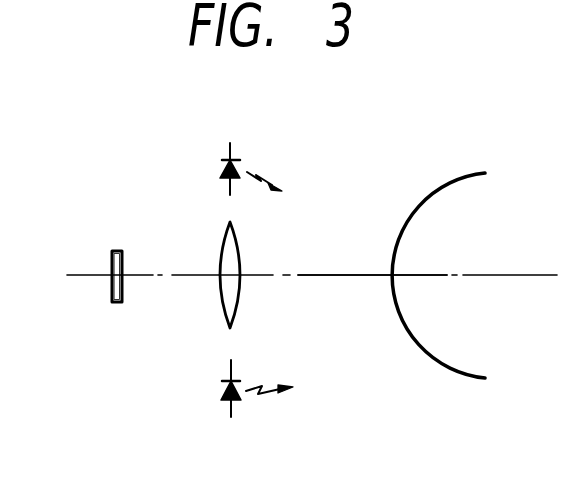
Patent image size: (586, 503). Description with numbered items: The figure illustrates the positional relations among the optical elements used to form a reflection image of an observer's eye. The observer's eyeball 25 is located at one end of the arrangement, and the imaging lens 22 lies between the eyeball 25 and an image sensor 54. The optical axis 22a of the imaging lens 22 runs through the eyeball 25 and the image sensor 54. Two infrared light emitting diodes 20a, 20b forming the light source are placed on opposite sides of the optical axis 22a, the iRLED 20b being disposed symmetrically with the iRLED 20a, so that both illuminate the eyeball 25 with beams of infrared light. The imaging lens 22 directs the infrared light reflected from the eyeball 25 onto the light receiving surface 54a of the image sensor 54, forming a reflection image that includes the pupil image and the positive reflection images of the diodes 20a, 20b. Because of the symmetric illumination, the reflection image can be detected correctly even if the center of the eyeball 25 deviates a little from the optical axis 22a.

The infrared light emitting diode 20a is at (222, 388).
The infrared light emitting diode 20b is at (223, 155).
The imaging lens 22 is at (243, 300).
The optical axis 22a is at (335, 273).
The eyeball 25 is at (433, 360).
The image sensor 54 is at (112, 288).
The light receiving surface 54a is at (123, 290).